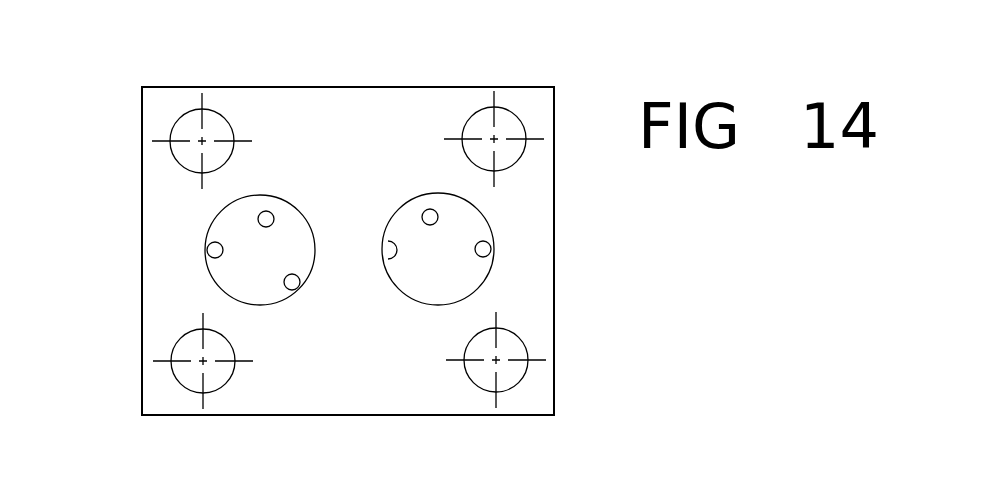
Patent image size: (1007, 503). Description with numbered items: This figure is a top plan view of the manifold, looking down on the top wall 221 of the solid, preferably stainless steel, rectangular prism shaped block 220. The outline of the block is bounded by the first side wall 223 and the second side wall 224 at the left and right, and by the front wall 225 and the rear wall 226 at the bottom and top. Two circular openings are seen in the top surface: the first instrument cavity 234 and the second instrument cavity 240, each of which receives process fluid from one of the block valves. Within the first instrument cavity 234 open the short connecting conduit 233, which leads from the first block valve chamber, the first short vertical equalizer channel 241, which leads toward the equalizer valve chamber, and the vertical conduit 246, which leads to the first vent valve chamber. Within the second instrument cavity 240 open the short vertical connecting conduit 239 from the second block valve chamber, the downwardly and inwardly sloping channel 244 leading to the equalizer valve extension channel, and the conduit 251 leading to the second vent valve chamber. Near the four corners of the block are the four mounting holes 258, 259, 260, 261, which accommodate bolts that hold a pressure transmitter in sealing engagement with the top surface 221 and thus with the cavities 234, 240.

The block 220 is at (533, 72).
The top wall 221 is at (428, 382).
The first side wall 223 is at (140, 230).
The second side wall 224 is at (557, 345).
The front wall 225 is at (532, 413).
The rear wall 226 is at (325, 88).
The connecting conduit 233 is at (208, 250).
The first instrument cavity 234 is at (270, 267).
The connecting conduit 239 is at (491, 252).
The second instrument cavity 240 is at (445, 242).
The first equalizer channel 241 is at (298, 288).
The sloping channel 244 is at (402, 255).
The vertical conduit 246 is at (275, 220).
The conduit 251 is at (436, 210).
The mounting hole 258 is at (218, 127).
The mounting hole 259 is at (497, 132).
The mounting hole 260 is at (500, 365).
The mounting hole 261 is at (220, 363).